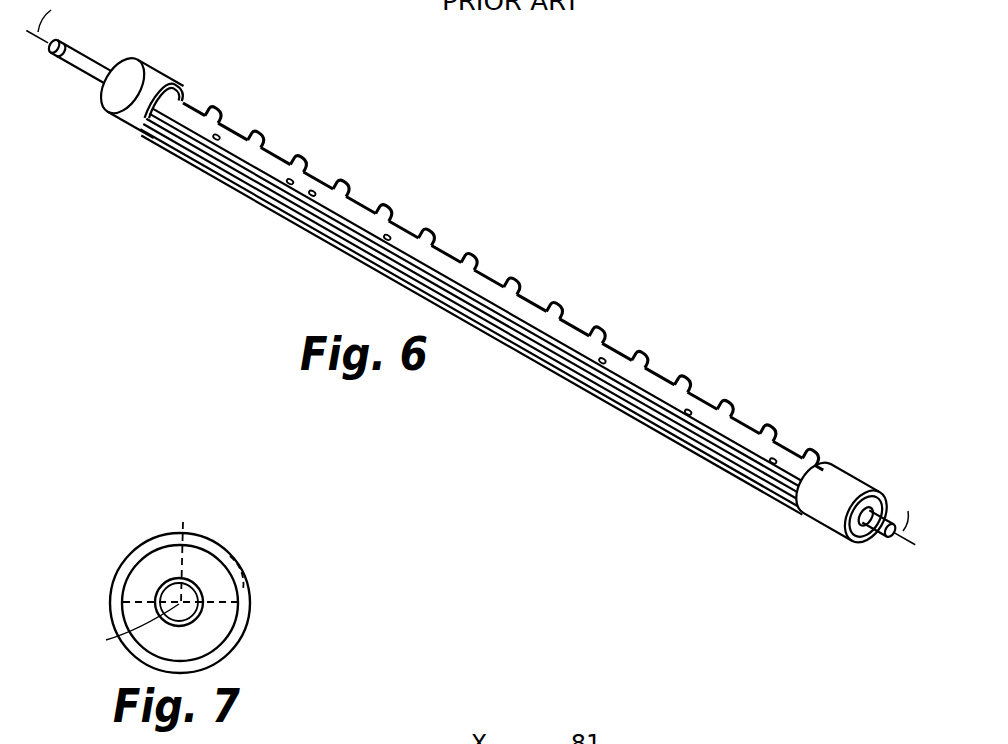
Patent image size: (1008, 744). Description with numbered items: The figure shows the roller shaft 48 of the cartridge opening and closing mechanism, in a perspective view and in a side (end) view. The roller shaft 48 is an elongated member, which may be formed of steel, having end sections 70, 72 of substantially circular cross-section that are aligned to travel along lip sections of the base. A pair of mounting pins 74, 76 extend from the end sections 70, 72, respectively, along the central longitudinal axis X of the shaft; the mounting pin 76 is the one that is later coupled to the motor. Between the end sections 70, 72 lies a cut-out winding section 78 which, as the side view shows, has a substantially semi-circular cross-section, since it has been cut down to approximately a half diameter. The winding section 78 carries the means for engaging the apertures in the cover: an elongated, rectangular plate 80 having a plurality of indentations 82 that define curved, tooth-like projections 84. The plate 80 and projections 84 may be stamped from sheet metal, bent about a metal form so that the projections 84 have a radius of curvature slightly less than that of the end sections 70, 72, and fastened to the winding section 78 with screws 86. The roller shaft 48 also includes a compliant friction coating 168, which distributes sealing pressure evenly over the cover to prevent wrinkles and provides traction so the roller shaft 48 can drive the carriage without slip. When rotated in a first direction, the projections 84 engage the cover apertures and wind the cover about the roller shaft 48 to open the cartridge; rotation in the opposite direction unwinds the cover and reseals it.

In FIG. 6, the roller shaft 48 is at (545, 251).
In FIG. 7, the roller shaft 48 is at (180, 564).
In FIG. 6, the end section 70 is at (146, 70).
In FIG. 6, the end section 72 is at (847, 480).
In FIG. 7, the end section 72 is at (237, 643).
In FIG. 6, the mounting pin 74 is at (92, 59).
In FIG. 6, the mounting pin 76 is at (871, 538).
In FIG. 6, the winding section 78 is at (351, 232).
In FIG. 7, the winding section 78 is at (126, 598).
In FIG. 6, the plate 80 is at (443, 263).
In FIG. 7, the plate 80 is at (184, 548).
In FIG. 6, the indentations 82 is at (277, 143).
In FIG. 6, the projections 84 is at (339, 178).
In FIG. 7, the projections 84 is at (228, 572).
In FIG. 6, the screws 86 is at (688, 413).
In FIG. 6, the compliant coating 168 is at (185, 88).
In FIG. 7, the compliant coating 168 is at (147, 551).